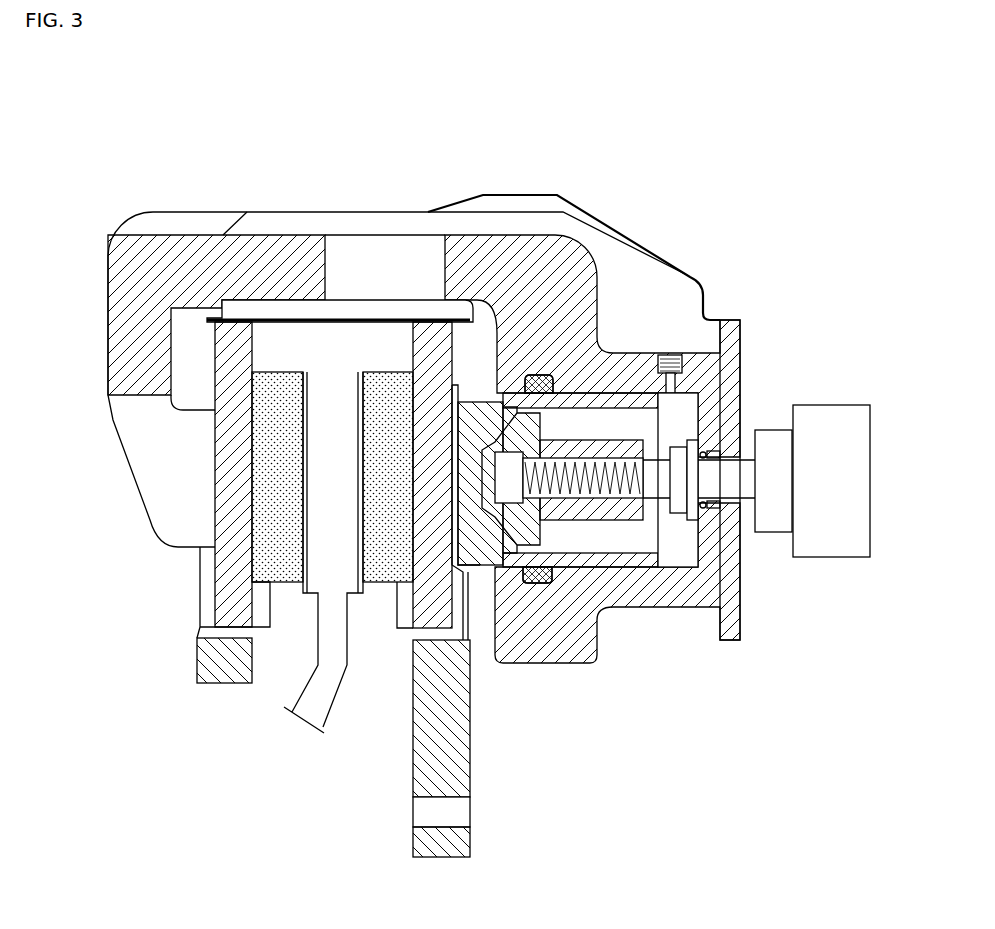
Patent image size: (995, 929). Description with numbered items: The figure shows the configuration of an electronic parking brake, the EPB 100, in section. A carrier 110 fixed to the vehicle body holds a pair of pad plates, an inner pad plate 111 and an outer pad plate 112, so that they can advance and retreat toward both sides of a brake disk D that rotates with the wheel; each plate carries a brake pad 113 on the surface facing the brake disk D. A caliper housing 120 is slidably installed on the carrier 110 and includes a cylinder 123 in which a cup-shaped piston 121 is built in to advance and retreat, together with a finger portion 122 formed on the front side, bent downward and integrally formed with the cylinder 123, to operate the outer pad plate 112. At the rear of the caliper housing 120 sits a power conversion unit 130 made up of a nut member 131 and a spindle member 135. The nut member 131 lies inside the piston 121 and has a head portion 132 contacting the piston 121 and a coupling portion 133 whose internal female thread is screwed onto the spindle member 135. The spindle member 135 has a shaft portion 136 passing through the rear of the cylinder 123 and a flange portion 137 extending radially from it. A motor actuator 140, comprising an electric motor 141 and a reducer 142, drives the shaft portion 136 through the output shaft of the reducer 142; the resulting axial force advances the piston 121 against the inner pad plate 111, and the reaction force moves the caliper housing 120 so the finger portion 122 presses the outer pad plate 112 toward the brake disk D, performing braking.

The electronic parking brake 100 is at (466, 94).
The carrier 110 is at (425, 773).
The inner pad plate 111 is at (425, 610).
The outer pad plate 112 is at (225, 578).
The brake pad 113 is at (283, 583).
The caliper housing 120 is at (313, 215).
The piston 121 is at (463, 568).
The finger portion 122 is at (138, 449).
The cylinder 123 is at (730, 318).
The power conversion unit 130 is at (608, 400).
The nut member 131 is at (550, 608).
The head portion 132 is at (515, 562).
The coupling portion 133 is at (594, 514).
The spindle member 135 is at (714, 609).
The shaft portion 136 is at (708, 490).
The flange portion 137 is at (677, 490).
The motor actuator 140 is at (809, 431).
The electric motor 141 is at (831, 458).
The reducer 142 is at (773, 437).
The brake disk D is at (320, 700).